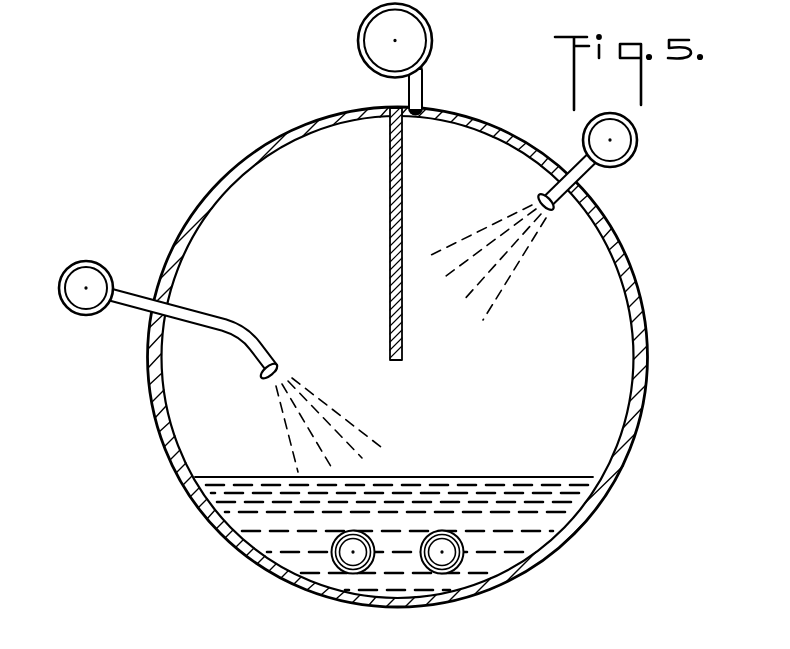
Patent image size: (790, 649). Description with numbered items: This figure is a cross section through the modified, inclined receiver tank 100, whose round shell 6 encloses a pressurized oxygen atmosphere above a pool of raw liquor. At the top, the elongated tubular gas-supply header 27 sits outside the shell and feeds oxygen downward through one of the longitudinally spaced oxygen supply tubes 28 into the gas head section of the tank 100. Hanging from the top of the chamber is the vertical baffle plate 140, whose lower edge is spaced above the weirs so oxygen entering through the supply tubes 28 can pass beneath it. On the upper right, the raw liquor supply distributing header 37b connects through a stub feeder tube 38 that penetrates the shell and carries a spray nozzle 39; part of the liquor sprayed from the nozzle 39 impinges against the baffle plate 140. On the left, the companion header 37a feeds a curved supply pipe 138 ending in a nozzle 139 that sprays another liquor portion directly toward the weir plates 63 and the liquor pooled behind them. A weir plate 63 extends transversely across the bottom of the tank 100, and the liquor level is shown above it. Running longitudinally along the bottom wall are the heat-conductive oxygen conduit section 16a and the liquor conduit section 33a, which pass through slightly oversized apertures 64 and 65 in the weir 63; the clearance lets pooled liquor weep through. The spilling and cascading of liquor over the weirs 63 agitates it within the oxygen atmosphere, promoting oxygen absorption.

The vessel shell 6 is at (637, 290).
The receiver tank 100 is at (553, 113).
The gas-supply header 27 is at (428, 30).
The oxygen supply tubes 28 is at (421, 83).
The baffle plate 140 is at (388, 215).
The raw liquor supply distributing header 37a is at (75, 262).
The raw liquor supply distributing header 37b is at (638, 141).
The stub feeder tubes 38 is at (592, 178).
The spray nozzle 39 is at (556, 216).
The curved spray pipe 138 is at (128, 293).
The nozzles 139 is at (262, 382).
The weir plates 63 is at (560, 477).
The conduit aperture 64 is at (332, 558).
The conduit aperture 65 is at (465, 549).
The heat-conductive section of oxygen supply conduit 16a is at (348, 571).
The heat conducting section of liquor portion supply conduit 33a is at (448, 572).